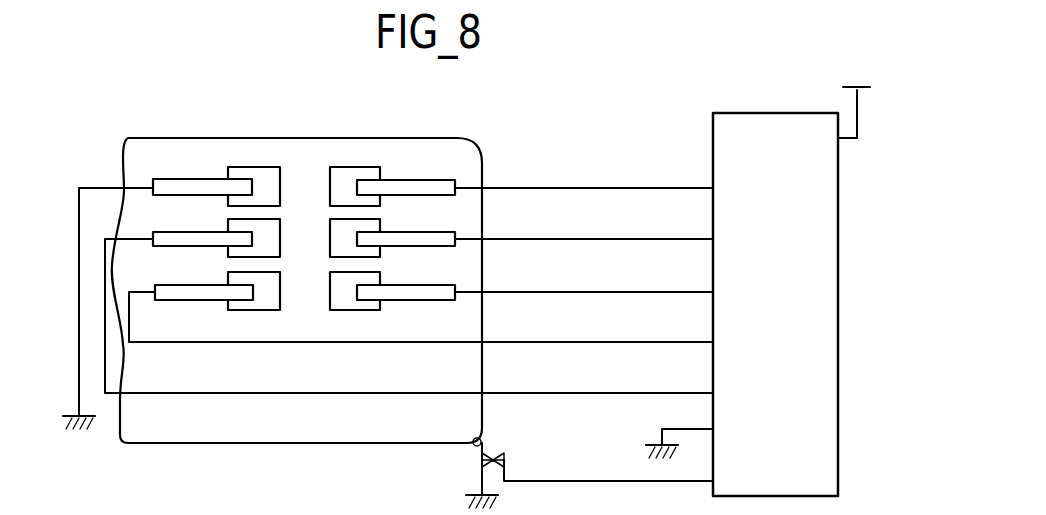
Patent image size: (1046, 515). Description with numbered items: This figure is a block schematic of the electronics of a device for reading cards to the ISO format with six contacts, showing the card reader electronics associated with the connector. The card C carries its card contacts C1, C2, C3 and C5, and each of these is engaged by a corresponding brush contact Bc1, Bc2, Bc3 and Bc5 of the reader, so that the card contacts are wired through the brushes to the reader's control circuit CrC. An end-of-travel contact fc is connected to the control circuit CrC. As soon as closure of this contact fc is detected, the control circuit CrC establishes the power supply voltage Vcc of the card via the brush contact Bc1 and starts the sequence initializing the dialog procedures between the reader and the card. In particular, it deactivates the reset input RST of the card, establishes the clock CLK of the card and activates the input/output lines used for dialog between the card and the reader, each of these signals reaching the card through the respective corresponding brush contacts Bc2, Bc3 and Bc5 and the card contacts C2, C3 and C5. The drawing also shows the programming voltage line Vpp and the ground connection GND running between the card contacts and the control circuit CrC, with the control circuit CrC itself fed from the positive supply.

The card C is at (256, 425).
The card contact C1 is at (350, 167).
The card contact C2 is at (330, 227).
The card contact C3 is at (330, 284).
The card contact C5 is at (248, 167).
The brush contact Bc1 is at (457, 181).
The brush contact Bc2 is at (457, 232).
The brush contact Bc3 is at (457, 285).
The brush contact Bc5 is at (188, 178).
The end-of-travel contact fc is at (505, 456).
The control circuit CrC is at (775, 304).
The power supply voltage Vcc is at (682, 188).
The reset input RST is at (688, 239).
The clock CLK is at (690, 292).
The programming voltage line Vpp is at (690, 393).
The ground line GND is at (675, 430).